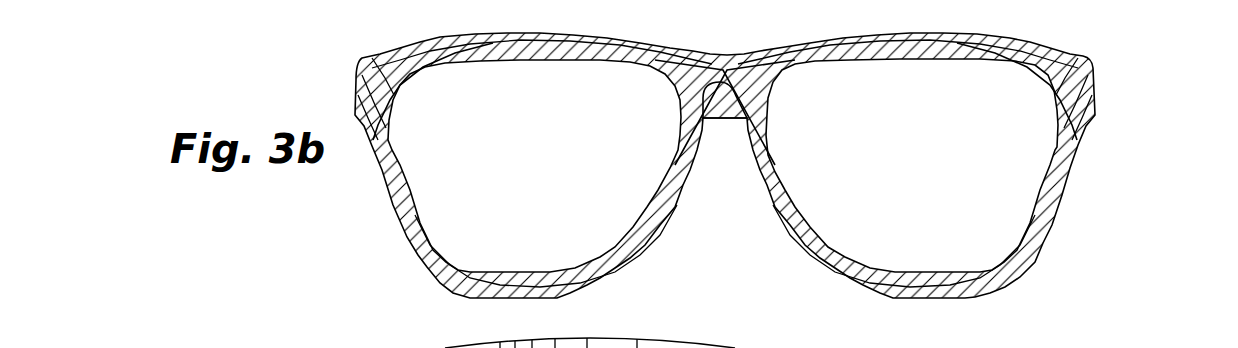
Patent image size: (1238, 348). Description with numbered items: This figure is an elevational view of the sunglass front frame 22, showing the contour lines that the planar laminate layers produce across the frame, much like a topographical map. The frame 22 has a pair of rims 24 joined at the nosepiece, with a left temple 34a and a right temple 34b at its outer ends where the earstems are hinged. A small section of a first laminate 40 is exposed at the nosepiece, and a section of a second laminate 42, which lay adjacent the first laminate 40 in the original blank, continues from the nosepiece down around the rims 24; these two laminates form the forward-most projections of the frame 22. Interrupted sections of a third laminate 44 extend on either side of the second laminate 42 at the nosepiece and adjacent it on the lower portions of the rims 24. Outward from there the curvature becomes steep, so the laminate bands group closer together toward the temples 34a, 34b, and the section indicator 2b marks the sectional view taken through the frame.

The front frame 22 is at (1122, 113).
The rims 24 is at (1025, 277).
The left temple 34a is at (372, 56).
The right temple 34b is at (1063, 53).
The first laminate 40 is at (725, 115).
The second laminate 42 is at (680, 200).
The third laminate 44 is at (605, 50).
The section line 2b is at (727, 56).